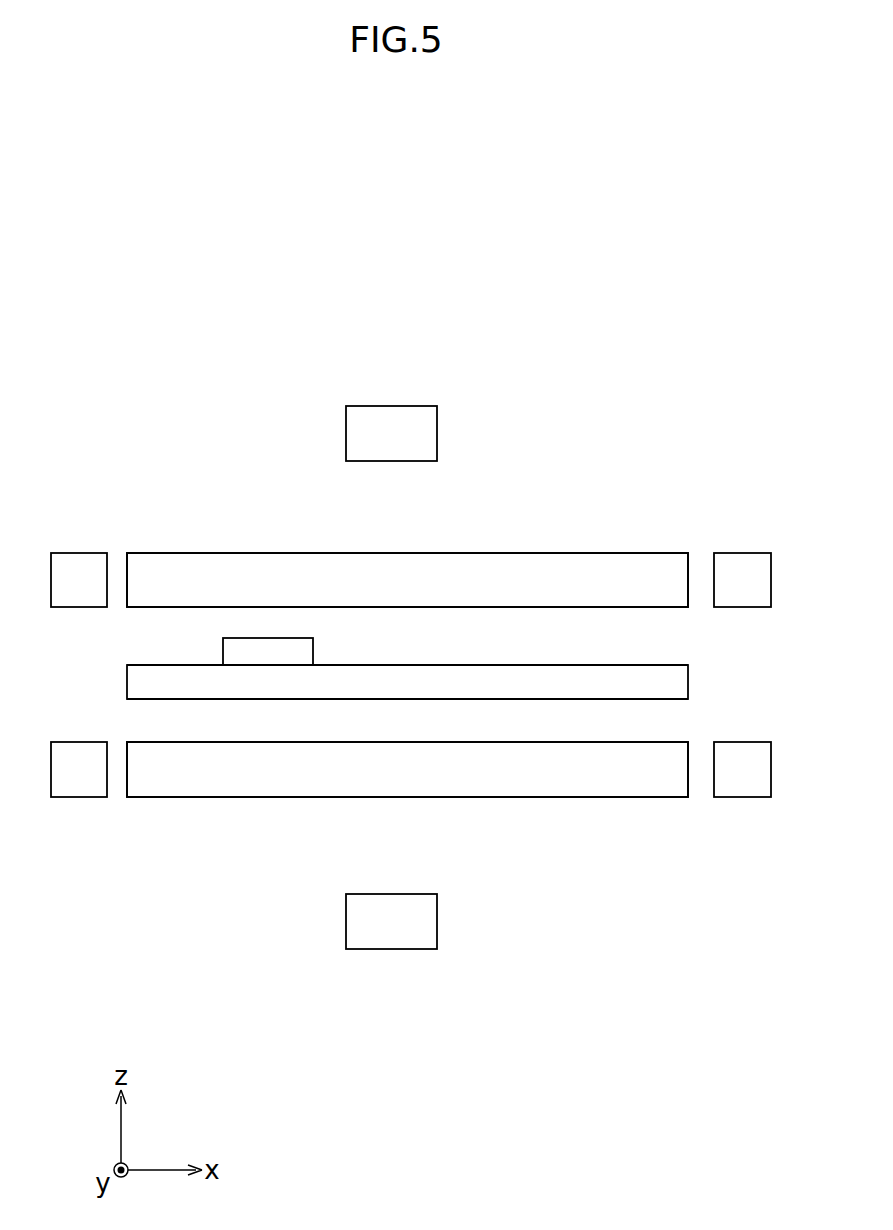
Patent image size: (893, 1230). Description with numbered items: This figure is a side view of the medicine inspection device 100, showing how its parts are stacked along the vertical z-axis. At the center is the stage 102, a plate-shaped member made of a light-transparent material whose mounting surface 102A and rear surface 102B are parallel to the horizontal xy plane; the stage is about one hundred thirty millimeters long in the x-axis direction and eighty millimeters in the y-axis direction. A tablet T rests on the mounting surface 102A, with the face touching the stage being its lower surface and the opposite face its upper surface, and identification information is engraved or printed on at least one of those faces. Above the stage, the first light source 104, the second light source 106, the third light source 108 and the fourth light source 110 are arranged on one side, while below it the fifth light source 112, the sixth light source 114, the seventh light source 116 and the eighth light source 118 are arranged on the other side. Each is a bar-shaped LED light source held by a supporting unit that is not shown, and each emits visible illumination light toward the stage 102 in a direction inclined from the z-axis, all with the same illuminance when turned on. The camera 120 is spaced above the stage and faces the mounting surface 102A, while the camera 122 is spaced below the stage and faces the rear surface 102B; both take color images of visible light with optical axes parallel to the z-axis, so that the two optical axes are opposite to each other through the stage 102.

The medicine inspection device 100 is at (636, 349).
The stage 102 is at (688, 682).
The mounting surface 102A is at (490, 663).
The rear surface 102B is at (511, 700).
The first light source 104 is at (79, 559).
The second light source 106 is at (742, 559).
The third light source 108 is at (258, 571).
The fourth light source 110 is at (587, 559).
The fifth light source 112 is at (80, 791).
The sixth light source 114 is at (743, 791).
The seventh light source 116 is at (258, 778).
The eighth light source 118 is at (588, 791).
The camera 120 is at (390, 412).
The camera 122 is at (391, 948).
The tablet T is at (224, 652).